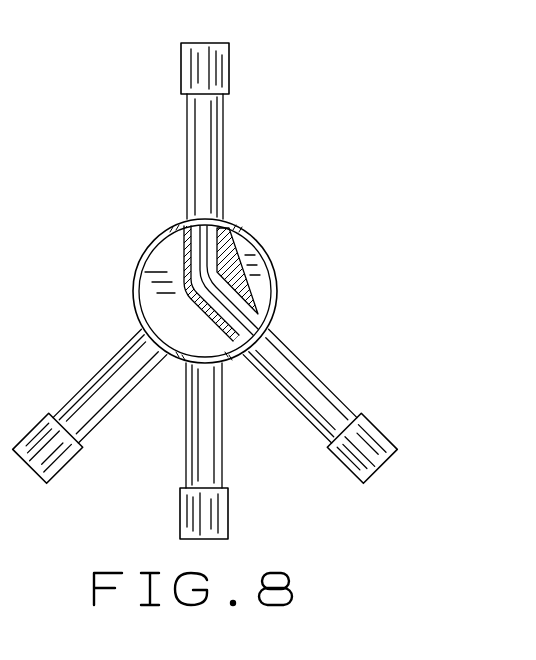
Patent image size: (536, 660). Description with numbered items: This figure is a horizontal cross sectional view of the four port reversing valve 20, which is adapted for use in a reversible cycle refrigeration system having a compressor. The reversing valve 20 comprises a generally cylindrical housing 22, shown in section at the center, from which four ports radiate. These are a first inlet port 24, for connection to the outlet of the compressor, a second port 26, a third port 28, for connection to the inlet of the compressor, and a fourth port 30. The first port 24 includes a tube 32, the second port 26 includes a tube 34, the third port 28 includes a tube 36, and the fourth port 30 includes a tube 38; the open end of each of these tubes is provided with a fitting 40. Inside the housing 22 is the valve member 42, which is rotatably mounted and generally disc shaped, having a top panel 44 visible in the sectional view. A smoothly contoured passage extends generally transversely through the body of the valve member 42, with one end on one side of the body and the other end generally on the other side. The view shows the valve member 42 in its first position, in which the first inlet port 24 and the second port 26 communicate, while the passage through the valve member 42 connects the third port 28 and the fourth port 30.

The reversing valve 20 is at (141, 229).
The housing 22 is at (258, 240).
The first inlet port 24 is at (164, 433).
The second port 26 is at (82, 359).
The third port 28 is at (242, 155).
The fourth port 30 is at (325, 364).
The tube 32 is at (197, 422).
The tube 34 is at (136, 355).
The tube 36 is at (196, 152).
The tube 38 is at (287, 363).
The fitting 40 is at (228, 72).
The valve member 42 is at (233, 317).
The top panel 44 is at (196, 333).